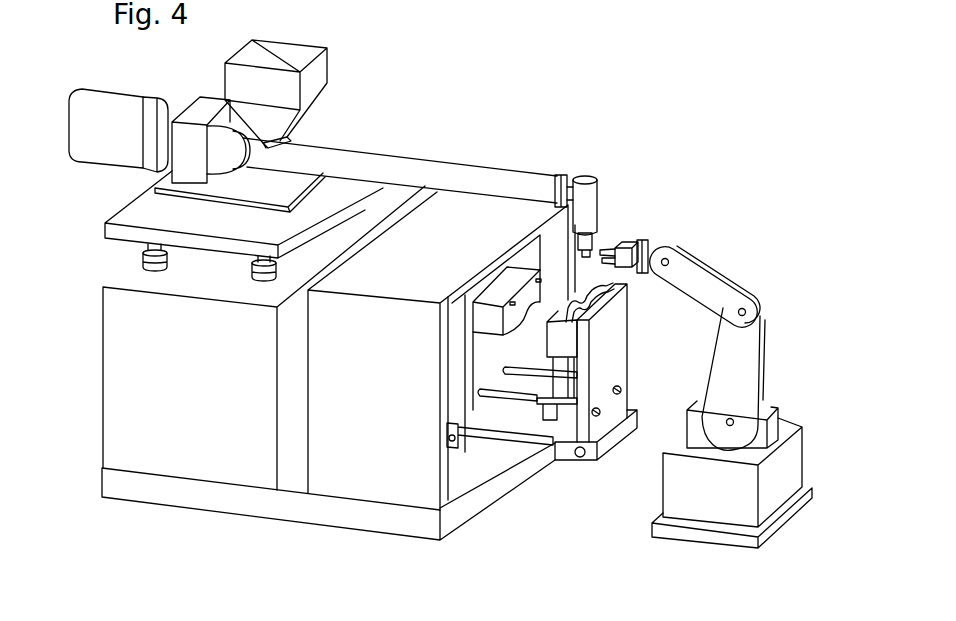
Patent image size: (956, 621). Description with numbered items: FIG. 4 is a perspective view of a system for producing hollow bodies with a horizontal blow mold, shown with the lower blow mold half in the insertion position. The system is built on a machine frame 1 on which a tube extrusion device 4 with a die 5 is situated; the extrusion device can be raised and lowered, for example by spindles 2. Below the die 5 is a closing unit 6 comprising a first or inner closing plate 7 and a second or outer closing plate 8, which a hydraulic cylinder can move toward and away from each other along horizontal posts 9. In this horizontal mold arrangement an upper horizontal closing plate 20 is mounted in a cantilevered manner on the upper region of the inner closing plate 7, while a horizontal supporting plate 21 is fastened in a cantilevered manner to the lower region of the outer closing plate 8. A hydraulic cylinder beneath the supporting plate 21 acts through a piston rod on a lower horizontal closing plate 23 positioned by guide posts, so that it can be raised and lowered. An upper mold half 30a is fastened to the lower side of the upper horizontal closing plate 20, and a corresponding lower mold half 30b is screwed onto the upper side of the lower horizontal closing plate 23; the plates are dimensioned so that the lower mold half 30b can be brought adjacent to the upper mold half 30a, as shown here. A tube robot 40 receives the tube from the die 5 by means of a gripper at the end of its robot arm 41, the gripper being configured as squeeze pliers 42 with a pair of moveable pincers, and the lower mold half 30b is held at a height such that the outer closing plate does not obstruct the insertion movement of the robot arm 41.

The machine frame 1 is at (130, 388).
The spindle 2 is at (144, 249).
The tube extrusion device 4 is at (393, 178).
The die 5 is at (598, 221).
The closing unit 6 is at (534, 476).
The first or inner closing plate 7 is at (485, 280).
The second or outer closing plate 8 is at (612, 360).
The horizontal post 9 is at (589, 462).
The upper horizontal closing plate 20 is at (518, 276).
The horizontal supporting plate 21 is at (447, 432).
The lower horizontal closing plate 23 is at (555, 356).
The upper mold half 30a is at (532, 303).
The lower mold half 30b is at (567, 337).
The tube robot 40 is at (672, 548).
The robot arm 41 is at (715, 276).
The squeeze pliers 42 is at (632, 238).